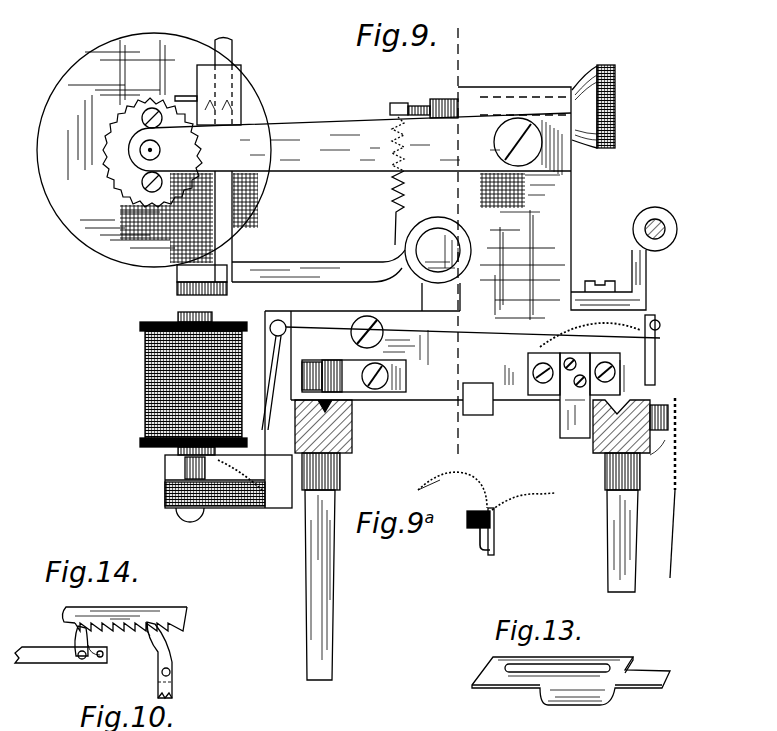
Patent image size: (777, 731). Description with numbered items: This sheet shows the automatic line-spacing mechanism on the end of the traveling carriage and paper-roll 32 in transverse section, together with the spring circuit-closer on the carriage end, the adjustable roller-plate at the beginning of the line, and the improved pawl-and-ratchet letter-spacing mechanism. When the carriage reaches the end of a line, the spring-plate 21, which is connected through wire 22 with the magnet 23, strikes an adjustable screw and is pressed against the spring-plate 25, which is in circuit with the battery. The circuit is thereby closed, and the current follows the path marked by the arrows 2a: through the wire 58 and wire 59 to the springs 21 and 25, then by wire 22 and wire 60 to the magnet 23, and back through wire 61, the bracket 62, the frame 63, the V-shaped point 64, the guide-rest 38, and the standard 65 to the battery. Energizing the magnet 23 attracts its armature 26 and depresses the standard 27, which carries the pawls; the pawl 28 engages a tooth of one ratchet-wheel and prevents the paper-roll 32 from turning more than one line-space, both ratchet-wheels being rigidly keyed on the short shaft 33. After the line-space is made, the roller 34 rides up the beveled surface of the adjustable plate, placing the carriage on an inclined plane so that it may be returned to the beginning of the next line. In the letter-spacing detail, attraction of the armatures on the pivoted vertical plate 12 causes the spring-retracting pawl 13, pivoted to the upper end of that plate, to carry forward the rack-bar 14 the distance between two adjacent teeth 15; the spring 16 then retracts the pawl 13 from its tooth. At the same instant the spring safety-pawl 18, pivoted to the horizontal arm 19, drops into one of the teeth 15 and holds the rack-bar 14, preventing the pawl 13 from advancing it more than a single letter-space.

In FIG. 9, the paper-roll 32 is at (136, 38).
In FIG. 9, the pawl 28 is at (194, 97).
In FIG. 9, the short shaft 33 is at (160, 150).
In FIG. 9, the standard 27 is at (233, 250).
In FIG. 9, the armature 26 is at (177, 288).
In FIG. 9, the magnet 23 is at (140, 404).
In FIG. 9, the roller 34 is at (320, 362).
In FIG. 9, the wire 22 is at (496, 340).
In FIG. 9A, the wire 22 is at (452, 490).
In FIG. 9, the wire 59 is at (608, 328).
In FIG. 9A, the wire 59 is at (527, 495).
In FIG. 9, the spring-plate 25 is at (528, 370).
In FIG. 9A, the spring-plate 25 is at (477, 510).
In FIG. 9, the spring-plate 21 is at (562, 430).
In FIG. 9A, the spring-plate 21 is at (494, 522).
In FIG. 9, the frame 63 is at (371, 378).
In FIG. 9, the V-shaped point 64 is at (352, 406).
In FIG. 9, the guide-rest 38 is at (352, 428).
In FIG. 9, the wire 60 is at (275, 383).
In FIG. 9, the wire 61 is at (242, 473).
In FIG. 9, the bracket 62 is at (253, 506).
In FIG. 9, the standard 65 is at (336, 597).
In FIG. 9, the wire 58 is at (688, 488).
In FIG. 9, the arrows 2a is at (428, 336).
In FIG. 14, the rack-bar 14 is at (62, 610).
In FIG. 14, the teeth 15 is at (112, 620).
In FIG. 14, the spring safety-pawl 18 is at (73, 640).
In FIG. 14, the horizontal arm 19 is at (57, 665).
In FIG. 14, the spring 16 is at (152, 648).
In FIG. 14, the spring-retracting pawl 13 is at (172, 660).
In FIG. 14, the pivoted vertical plate 12 is at (173, 687).